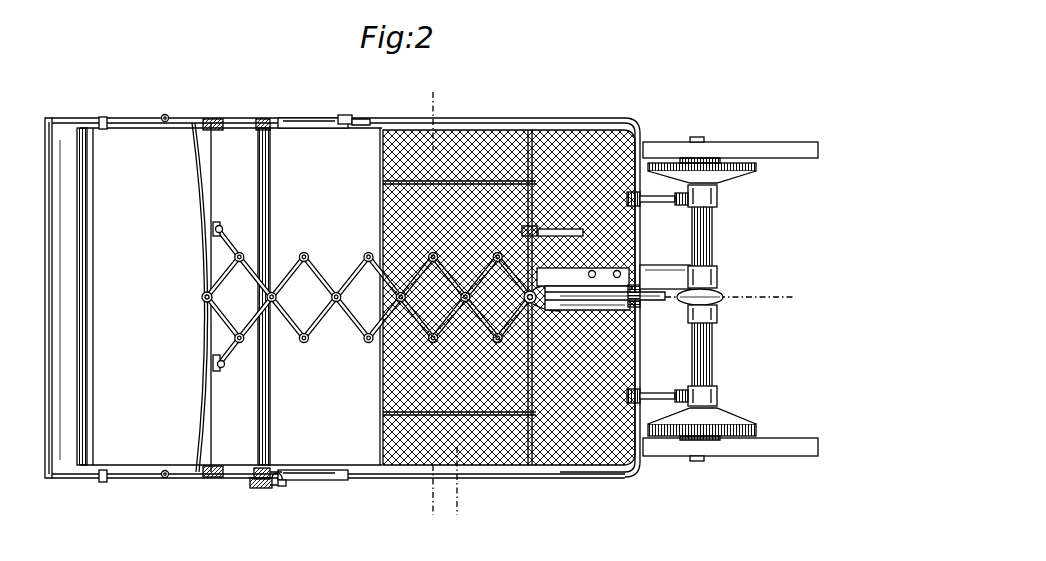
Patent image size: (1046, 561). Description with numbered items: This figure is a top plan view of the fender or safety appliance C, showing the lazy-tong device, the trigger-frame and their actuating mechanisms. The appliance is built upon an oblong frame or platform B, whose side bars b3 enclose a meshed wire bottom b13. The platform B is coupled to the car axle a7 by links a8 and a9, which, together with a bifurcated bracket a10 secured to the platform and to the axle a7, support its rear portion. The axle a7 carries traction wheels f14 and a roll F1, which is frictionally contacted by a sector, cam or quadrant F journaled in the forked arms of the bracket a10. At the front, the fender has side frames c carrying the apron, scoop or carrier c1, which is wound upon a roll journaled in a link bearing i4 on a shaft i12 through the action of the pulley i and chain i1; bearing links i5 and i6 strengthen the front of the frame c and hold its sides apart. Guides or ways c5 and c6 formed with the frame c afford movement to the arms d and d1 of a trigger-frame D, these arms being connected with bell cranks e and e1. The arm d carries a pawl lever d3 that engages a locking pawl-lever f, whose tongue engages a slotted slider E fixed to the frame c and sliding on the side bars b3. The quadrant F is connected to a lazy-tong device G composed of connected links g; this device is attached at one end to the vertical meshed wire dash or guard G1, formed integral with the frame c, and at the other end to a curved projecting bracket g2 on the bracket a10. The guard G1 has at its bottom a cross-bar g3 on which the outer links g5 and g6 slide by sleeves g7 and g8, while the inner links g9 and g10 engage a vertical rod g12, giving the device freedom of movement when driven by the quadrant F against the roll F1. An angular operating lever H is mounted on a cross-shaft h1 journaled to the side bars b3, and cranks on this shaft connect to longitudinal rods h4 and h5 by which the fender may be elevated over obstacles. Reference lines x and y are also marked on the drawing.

The trigger-frame D is at (50, 297).
The arm of trigger-frame d is at (80, 118).
The arm of trigger-frame d1 is at (143, 480).
The pawl lever d3 is at (344, 115).
The angular operating lever H is at (580, 200).
The side bars of platform frame b3 is at (596, 478).
The meshed wire bottom b13 is at (558, 226).
The frame or platform B is at (509, 280).
The fender or safety appliance C is at (221, 296).
The frame of fender c is at (263, 119).
The apron, scoop or carrier c1 is at (80, 414).
The guide or way c5 is at (104, 117).
The guide or way c6 is at (104, 482).
The bell crank e is at (165, 114).
The bell crank e1 is at (168, 478).
The slotted slider E is at (300, 118).
The locking pawl-lever f is at (362, 119).
The traction wheels f14 is at (757, 176).
The pulley i is at (272, 488).
The chain i1 is at (280, 488).
The link bearing i4 is at (256, 488).
The bearing link i5 is at (214, 119).
The bearing link i6 is at (215, 478).
The shaft i12 is at (284, 486).
The lazy-tong device G is at (368, 295).
The wire dash or guard G1 is at (191, 297).
The links g is at (322, 318).
The curved projecting bracket g2 is at (592, 282).
The cross-bar g3 is at (211, 165).
The outer link g5 is at (265, 265).
The outer link g6 is at (257, 327).
The sleeve g7 is at (212, 232).
The sleeve g8 is at (212, 361).
The inner link g9 is at (224, 276).
The inner link g10 is at (225, 317).
The vertical rod g12 is at (201, 298).
The cross-shaft h1 is at (532, 140).
The longitudinal rod h4 is at (402, 180).
The longitudinal rod h5 is at (420, 416).
The axis x is at (429, 304).
The axis y is at (629, 412).
The sector, cam or quadrant F is at (662, 310).
The roll F1 is at (722, 292).
The axle a7 is at (713, 226).
The link a8 is at (668, 203).
The link a9 is at (657, 385).
The bifurcated bracket a10 is at (662, 278).